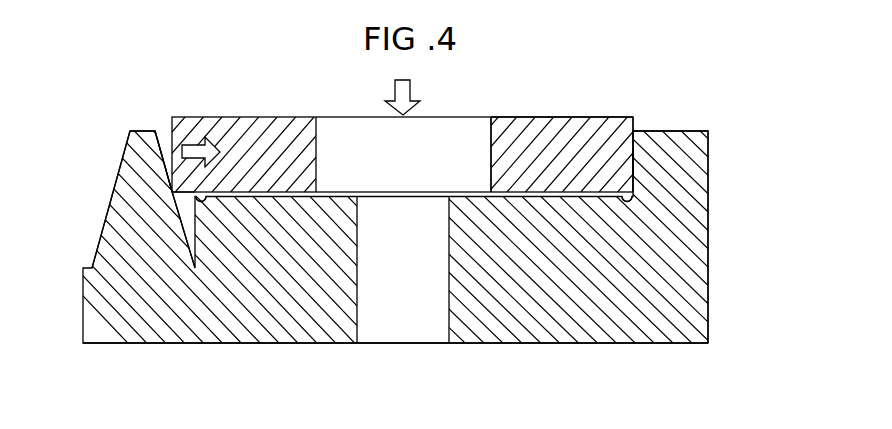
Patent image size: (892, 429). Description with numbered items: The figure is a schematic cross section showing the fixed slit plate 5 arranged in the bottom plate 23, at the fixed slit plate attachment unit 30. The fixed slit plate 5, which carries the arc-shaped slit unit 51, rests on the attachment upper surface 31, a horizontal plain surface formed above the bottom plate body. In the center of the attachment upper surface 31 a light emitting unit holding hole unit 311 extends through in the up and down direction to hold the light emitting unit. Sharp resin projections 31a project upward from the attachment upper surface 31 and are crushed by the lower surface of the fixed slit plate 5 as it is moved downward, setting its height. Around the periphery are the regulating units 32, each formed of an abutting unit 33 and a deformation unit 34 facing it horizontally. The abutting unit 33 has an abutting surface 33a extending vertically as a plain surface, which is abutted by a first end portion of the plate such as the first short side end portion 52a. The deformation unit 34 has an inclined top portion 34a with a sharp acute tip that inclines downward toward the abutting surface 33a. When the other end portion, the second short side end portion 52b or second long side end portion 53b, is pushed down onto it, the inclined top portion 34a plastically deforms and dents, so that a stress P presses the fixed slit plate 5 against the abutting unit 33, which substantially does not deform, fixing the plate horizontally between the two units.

The fixed slit plate 5 is at (531, 110).
The slit unit 51 is at (491, 140).
The bottom plate 23 is at (598, 346).
The fixed slit plate attachment unit 30 is at (712, 277).
The attachment upper surface 31 is at (272, 191).
The light emitting unit holding hole unit 311 is at (357, 312).
The projections 31a is at (199, 200).
The regulating units 32 is at (407, 206).
The abutting unit 33 is at (672, 137).
The abutting surface 33a is at (633, 138).
The deformation unit 34 is at (139, 131).
The inclined top portion 34a is at (158, 141).
The first short side end portion 52a is at (633, 163).
The second short side end portion 52b is at (173, 191).
The second long side end portion 53b is at (172, 191).
The stress P is at (200, 138).